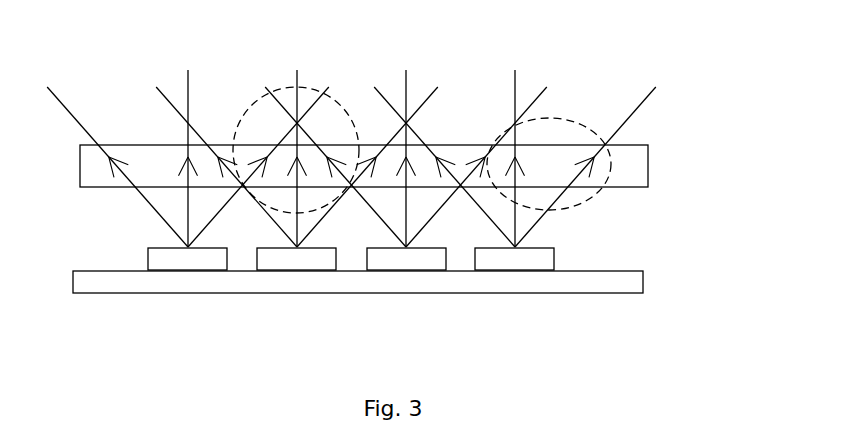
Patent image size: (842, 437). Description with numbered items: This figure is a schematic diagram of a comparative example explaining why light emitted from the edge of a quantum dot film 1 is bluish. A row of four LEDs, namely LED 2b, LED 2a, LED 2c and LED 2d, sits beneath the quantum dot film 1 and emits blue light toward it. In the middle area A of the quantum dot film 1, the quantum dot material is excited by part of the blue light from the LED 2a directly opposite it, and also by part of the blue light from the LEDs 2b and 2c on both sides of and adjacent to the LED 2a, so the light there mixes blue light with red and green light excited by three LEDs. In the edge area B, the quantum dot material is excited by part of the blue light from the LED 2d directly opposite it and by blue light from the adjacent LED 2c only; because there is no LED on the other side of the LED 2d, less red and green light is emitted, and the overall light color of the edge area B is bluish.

The quantum dot film 1 is at (648, 165).
The LED 2a is at (297, 259).
The LED 2b is at (182, 259).
The LED 2c is at (407, 259).
The LED 2d is at (517, 259).
The middle area A is at (313, 88).
The edge area B is at (578, 125).